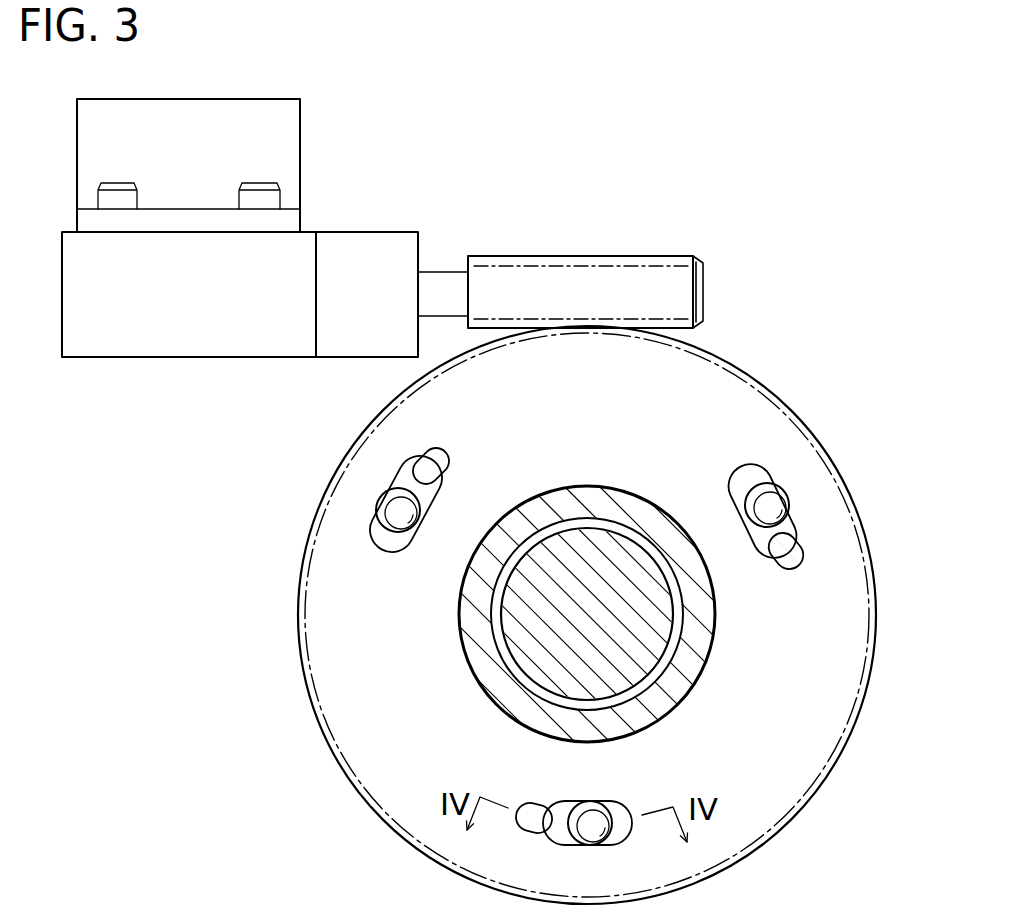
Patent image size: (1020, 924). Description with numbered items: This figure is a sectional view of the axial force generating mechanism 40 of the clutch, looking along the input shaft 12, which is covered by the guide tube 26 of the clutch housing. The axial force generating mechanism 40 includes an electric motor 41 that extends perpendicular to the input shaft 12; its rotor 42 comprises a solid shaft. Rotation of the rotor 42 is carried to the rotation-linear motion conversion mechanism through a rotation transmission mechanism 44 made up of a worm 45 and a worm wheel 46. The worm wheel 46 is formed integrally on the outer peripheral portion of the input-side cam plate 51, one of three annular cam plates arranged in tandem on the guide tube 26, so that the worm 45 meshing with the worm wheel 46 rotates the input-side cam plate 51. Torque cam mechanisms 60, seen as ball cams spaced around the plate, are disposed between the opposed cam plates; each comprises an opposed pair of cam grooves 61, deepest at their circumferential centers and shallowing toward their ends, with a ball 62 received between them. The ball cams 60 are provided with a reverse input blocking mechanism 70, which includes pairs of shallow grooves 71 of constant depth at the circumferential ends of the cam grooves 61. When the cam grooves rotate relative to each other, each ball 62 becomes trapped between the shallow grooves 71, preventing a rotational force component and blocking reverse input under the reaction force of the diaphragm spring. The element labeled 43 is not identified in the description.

The input shaft 12 is at (565, 540).
The guide tube 26 is at (587, 579).
The axial force generating mechanism 40 is at (382, 270).
The electric motor 41 is at (182, 345).
The rotor 42 is at (443, 282).
The motor 43 is at (292, 219).
The rotation transmission mechanism 44 is at (585, 250).
The worm 45 is at (610, 278).
The worm wheel 46 is at (587, 599).
The input-side cam plate 51 is at (762, 412).
The torque cam mechanism 60 is at (377, 497).
The cam groove 61 is at (574, 621).
The ball 62 is at (387, 515).
The reverse input blocking mechanism 70 is at (420, 452).
The shallow groove 71 is at (795, 560).